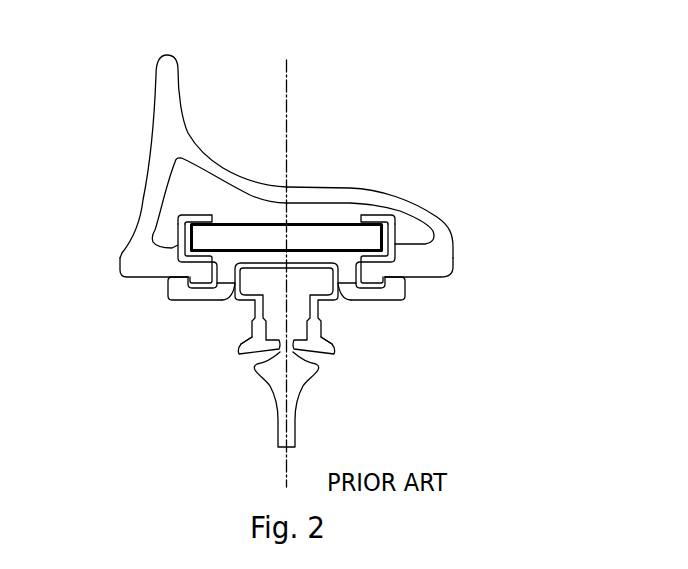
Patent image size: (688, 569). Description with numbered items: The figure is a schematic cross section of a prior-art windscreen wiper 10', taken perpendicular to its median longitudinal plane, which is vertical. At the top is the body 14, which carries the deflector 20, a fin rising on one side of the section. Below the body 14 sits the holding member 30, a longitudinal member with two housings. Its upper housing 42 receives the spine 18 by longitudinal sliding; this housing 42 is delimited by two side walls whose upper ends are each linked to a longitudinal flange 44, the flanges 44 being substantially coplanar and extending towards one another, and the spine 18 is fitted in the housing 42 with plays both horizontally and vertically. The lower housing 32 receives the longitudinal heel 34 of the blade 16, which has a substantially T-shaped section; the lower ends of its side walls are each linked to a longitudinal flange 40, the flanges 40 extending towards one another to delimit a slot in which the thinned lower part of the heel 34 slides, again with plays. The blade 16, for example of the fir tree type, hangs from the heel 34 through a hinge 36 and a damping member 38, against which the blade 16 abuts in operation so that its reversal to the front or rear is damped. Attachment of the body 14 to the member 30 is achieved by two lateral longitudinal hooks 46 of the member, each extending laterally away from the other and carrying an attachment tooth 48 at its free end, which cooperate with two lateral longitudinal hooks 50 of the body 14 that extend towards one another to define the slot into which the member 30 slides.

The windscreen wiper 10' is at (327, 262).
The body 14 is at (450, 210).
The blade 16 is at (250, 418).
The spine 18 is at (275, 209).
The deflector 20 is at (180, 112).
The holding member 30 is at (155, 313).
The lower housing 32 is at (222, 296).
The heel 34 is at (292, 284).
The hinge 36 is at (313, 364).
The damping member 38 is at (333, 348).
The longitudinal flange 40 is at (250, 313).
The upper housing 42 is at (180, 237).
The longitudinal flange 44 is at (201, 216).
The lateral longitudinal hook 46 is at (186, 304).
The attachment tooth 48 is at (172, 284).
The lateral longitudinal hook 50 is at (172, 282).